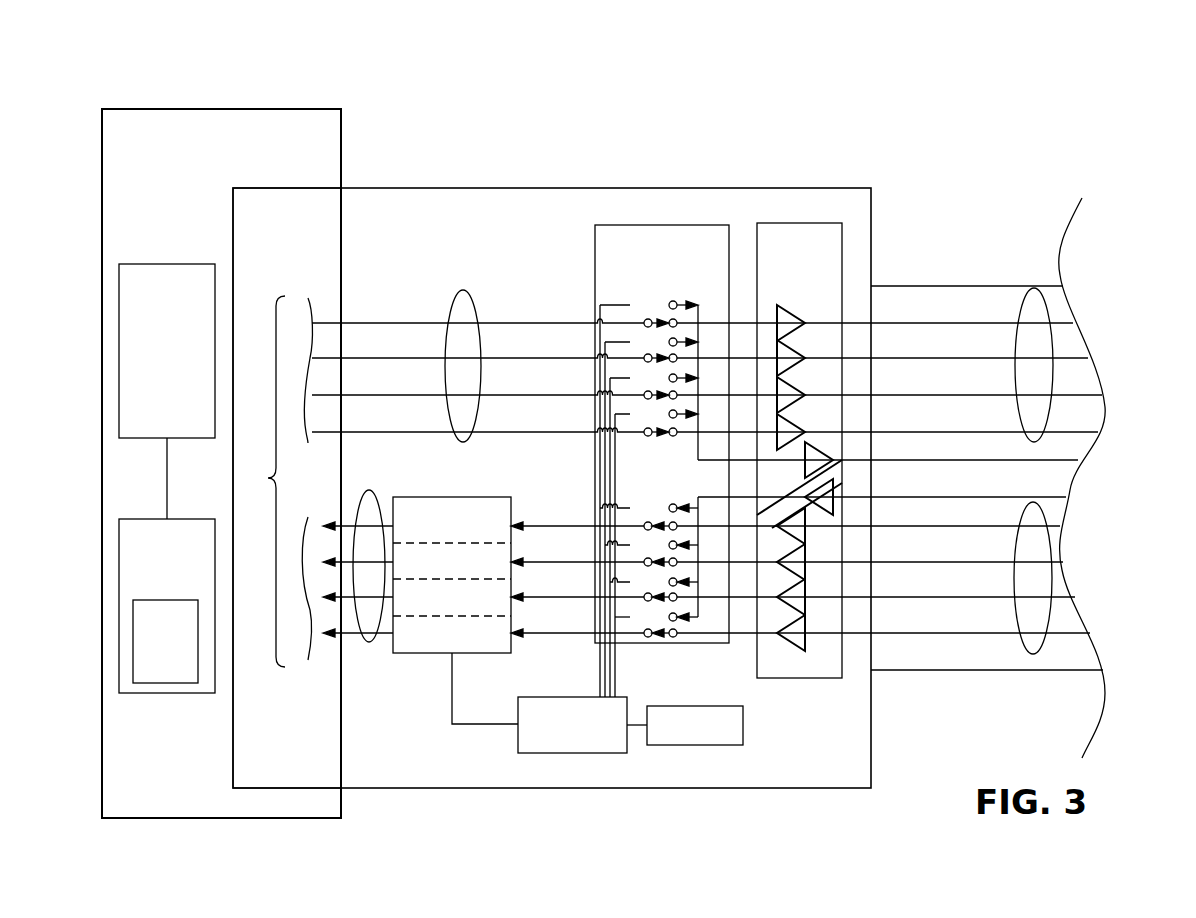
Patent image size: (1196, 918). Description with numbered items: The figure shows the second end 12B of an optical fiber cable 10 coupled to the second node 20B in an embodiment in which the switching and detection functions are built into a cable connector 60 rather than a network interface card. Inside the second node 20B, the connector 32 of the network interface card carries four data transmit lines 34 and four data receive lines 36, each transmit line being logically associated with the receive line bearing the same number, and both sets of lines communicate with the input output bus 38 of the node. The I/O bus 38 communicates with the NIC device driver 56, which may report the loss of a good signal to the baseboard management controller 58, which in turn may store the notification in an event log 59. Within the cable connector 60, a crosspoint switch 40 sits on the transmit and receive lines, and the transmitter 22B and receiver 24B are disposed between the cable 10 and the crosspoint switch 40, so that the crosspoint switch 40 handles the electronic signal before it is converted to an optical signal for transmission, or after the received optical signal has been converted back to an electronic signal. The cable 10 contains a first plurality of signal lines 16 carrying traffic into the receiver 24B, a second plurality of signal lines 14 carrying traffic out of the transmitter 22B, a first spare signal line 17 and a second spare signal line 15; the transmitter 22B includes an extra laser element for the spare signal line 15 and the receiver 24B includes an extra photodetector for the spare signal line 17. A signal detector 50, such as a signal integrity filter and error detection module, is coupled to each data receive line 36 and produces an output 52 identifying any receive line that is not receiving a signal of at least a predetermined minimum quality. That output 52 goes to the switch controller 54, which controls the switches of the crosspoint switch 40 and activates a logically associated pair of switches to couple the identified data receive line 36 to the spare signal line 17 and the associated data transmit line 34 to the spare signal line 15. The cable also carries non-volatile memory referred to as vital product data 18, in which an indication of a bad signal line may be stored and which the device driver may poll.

The cable 10 is at (988, 160).
The second end 12B is at (958, 286).
The second plurality of signal lines 14 is at (1048, 297).
The second spare signal line 15 is at (1077, 461).
The first plurality of signal lines 16 is at (1033, 654).
The first spare signal line 17 is at (1060, 498).
The vital product data (VPD) 18 is at (688, 706).
The second node 20B is at (283, 109).
The transmitter 22B is at (830, 223).
The receiver 24B is at (796, 678).
The connector 32 is at (343, 224).
The data transmit lines 34 is at (465, 290).
The data receive lines 36 is at (369, 644).
The input output bus 38 is at (282, 481).
The crosspoint switch 40 is at (716, 225).
The signal detector 50 is at (400, 497).
The output 52 is at (488, 726).
The switch controller 54 is at (549, 697).
The NIC device driver 56 is at (140, 264).
The baseboard management controller (BMC) 58 is at (140, 519).
The event log 59 is at (145, 600).
The cable connector 60 is at (582, 188).